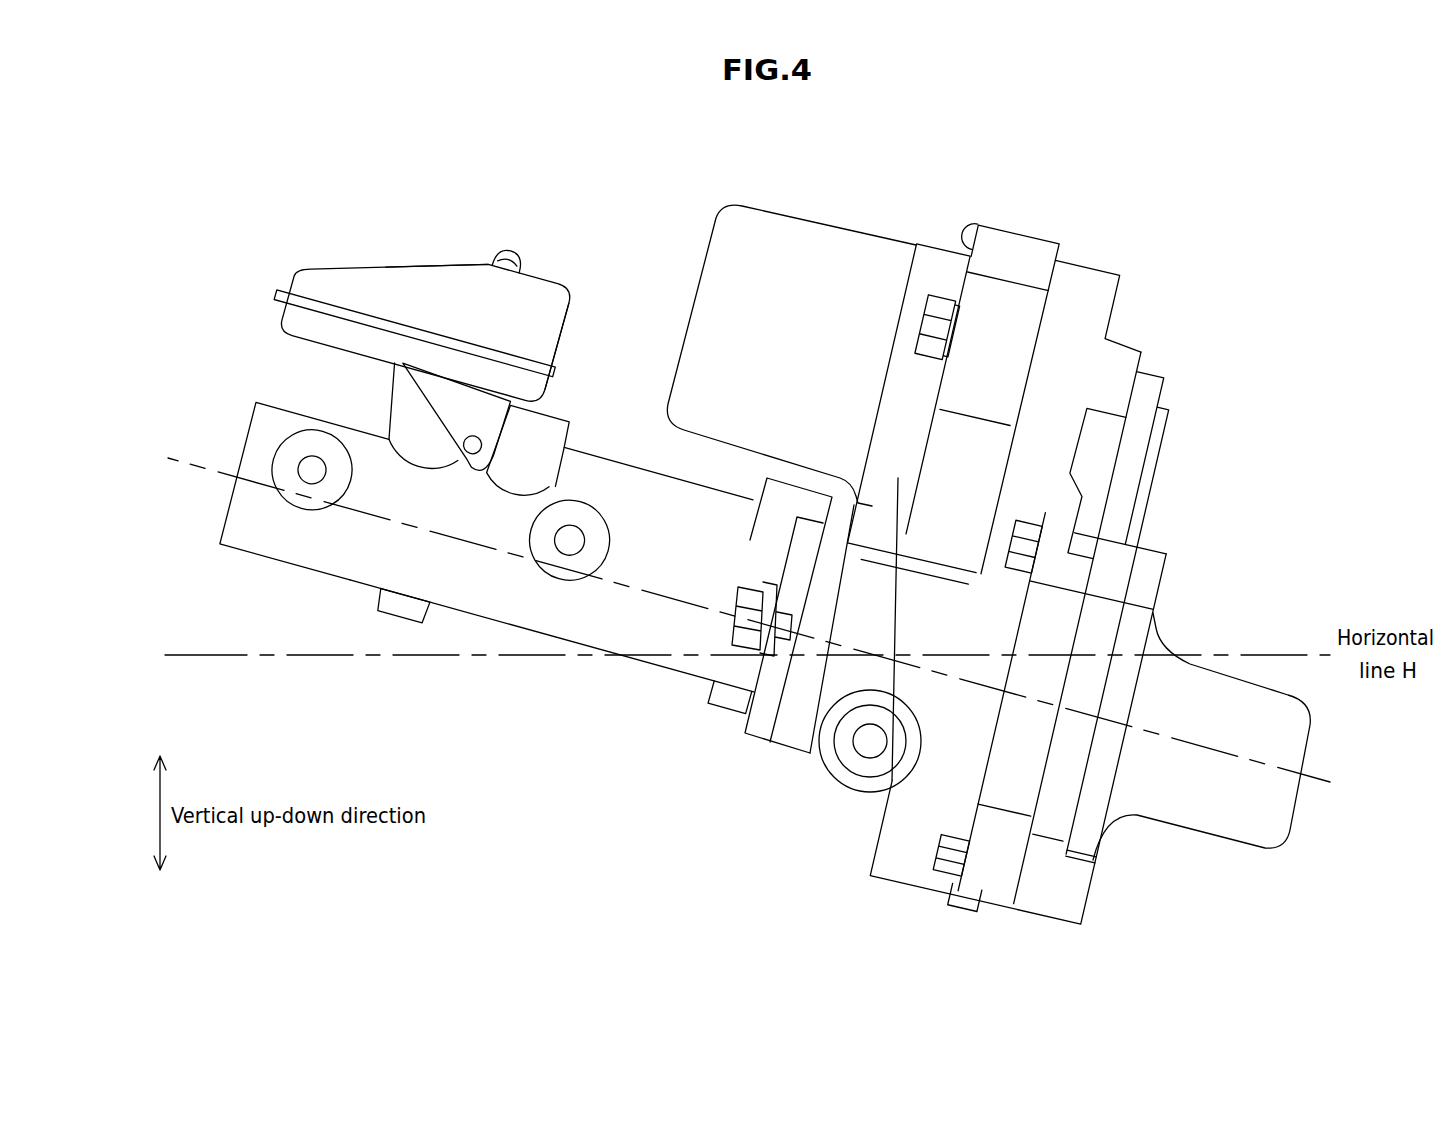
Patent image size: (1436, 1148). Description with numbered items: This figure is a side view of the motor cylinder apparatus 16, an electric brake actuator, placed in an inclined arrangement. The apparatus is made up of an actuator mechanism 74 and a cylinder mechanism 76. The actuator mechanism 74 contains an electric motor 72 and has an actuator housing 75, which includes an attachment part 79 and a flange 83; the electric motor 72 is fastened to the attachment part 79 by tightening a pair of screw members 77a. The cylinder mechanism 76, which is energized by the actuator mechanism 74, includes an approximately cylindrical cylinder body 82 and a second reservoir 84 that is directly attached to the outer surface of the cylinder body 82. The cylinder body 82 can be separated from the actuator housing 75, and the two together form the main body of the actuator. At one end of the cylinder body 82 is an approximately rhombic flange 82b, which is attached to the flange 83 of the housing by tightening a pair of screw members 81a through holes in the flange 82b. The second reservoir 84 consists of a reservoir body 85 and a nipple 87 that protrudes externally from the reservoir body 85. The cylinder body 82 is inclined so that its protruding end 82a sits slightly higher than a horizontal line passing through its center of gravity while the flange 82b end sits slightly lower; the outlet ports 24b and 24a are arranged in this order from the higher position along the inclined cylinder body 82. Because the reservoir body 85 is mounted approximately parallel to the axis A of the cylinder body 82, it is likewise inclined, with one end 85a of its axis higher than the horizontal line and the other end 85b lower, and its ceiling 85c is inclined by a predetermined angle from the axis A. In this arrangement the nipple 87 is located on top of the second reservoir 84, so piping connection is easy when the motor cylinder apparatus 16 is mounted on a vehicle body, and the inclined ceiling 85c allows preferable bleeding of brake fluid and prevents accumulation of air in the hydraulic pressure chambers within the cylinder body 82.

The motor cylinder apparatus 16 is at (988, 513).
The electric motor 72 is at (812, 222).
The screw members 77a is at (922, 300).
The attachment part 79 is at (1090, 262).
The actuator housing 75 is at (1114, 457).
The actuator mechanism 74 is at (1178, 500).
The reservoir body 85 is at (318, 262).
The one end of the reservoir body axis 85a is at (282, 289).
The other end of the reservoir body axis 85b is at (558, 330).
The ceiling 85c is at (377, 263).
The second reservoir 84 is at (433, 259).
The nipple 87 is at (507, 260).
The outlet port 24b is at (305, 455).
The outlet port 24a is at (600, 520).
The cylinder body 82 is at (637, 668).
The one end of the cylinder body 82a is at (232, 498).
The flange 82b is at (754, 700).
The flange 83 is at (805, 735).
The screw members 81a is at (732, 613).
The cylinder mechanism 76 is at (525, 678).
The axis A is at (1318, 775).